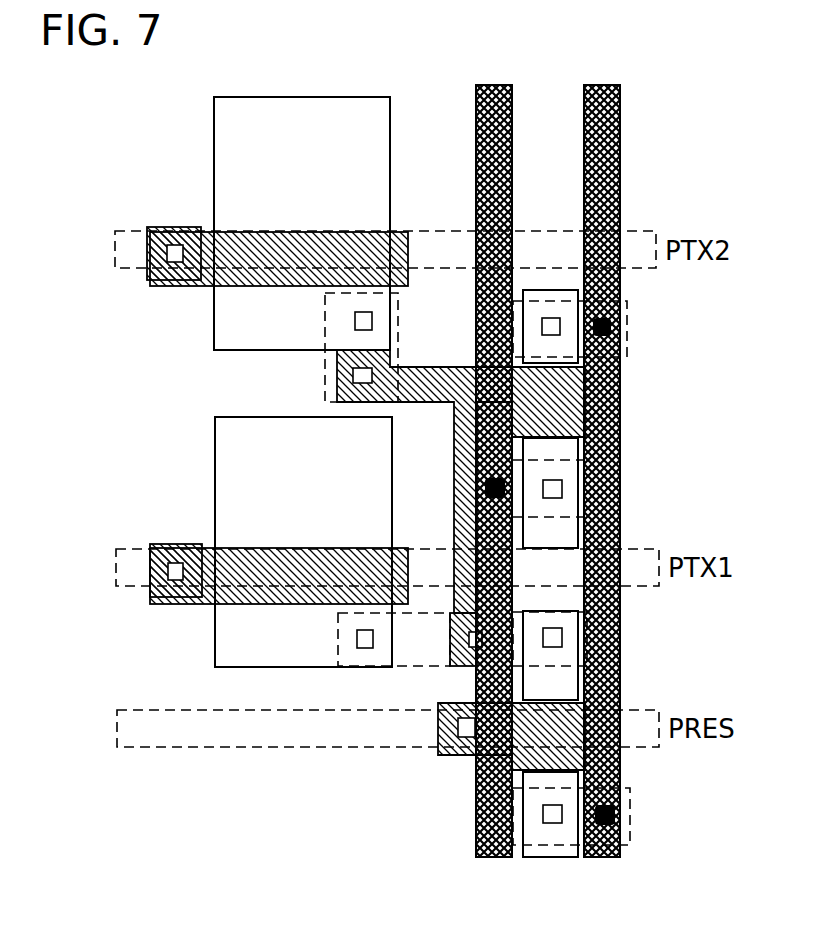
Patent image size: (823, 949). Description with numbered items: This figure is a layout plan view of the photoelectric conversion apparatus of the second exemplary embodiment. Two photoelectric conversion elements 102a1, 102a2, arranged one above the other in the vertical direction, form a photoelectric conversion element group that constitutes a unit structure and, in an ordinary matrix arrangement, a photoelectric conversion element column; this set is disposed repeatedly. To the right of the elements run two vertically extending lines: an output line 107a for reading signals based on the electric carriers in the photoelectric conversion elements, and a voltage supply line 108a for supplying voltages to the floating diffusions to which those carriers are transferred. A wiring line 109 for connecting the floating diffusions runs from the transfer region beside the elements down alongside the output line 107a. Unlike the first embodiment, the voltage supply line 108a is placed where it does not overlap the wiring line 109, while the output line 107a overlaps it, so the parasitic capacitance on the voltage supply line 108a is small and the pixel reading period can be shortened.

The photoelectric conversion element 102a1 is at (214, 152).
The photoelectric conversion element 102a2 is at (215, 453).
The output line 107a is at (500, 85).
The voltage supply line 108a is at (594, 85).
The wiring line for connecting FDs 109 is at (447, 388).